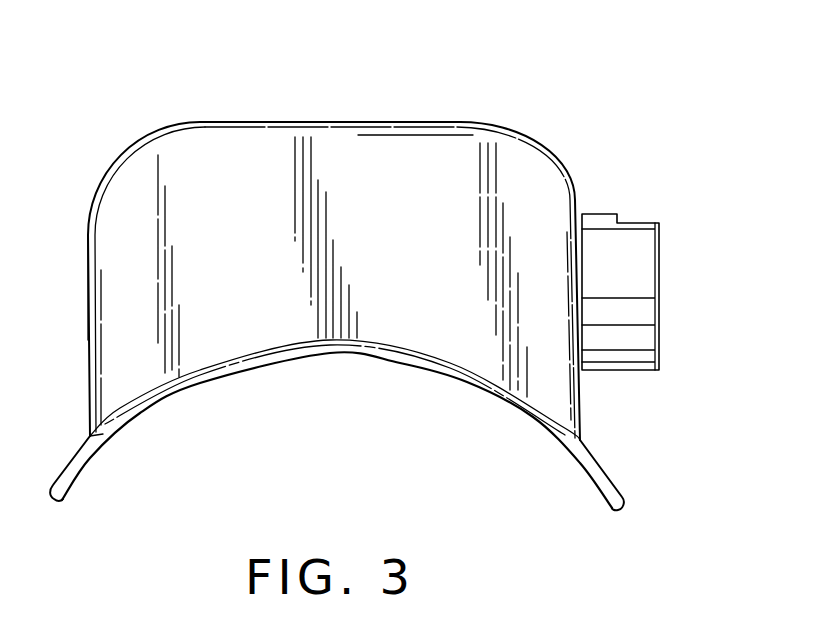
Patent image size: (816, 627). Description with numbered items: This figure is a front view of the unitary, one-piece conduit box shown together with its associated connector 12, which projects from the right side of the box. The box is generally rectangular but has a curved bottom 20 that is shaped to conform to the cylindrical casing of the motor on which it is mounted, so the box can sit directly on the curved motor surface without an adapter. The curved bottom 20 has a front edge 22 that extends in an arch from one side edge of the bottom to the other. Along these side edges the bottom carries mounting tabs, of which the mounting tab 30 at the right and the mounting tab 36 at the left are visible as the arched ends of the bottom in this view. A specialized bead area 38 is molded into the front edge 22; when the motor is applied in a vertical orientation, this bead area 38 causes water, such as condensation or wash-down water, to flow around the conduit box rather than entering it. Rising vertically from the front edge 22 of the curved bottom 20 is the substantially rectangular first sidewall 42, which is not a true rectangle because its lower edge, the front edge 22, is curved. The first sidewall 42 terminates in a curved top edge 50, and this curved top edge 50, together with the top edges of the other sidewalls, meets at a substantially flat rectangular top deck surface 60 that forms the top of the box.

The connector 12 is at (642, 243).
The curved bottom 20 is at (192, 388).
The front edge 22 is at (345, 348).
The mounting tab 30 is at (603, 483).
The mounting tab 36 is at (72, 470).
The bead area 38 is at (367, 342).
The first sidewall 42 is at (417, 218).
The curved top edge 50 is at (158, 133).
The top deck surface 60 is at (338, 121).